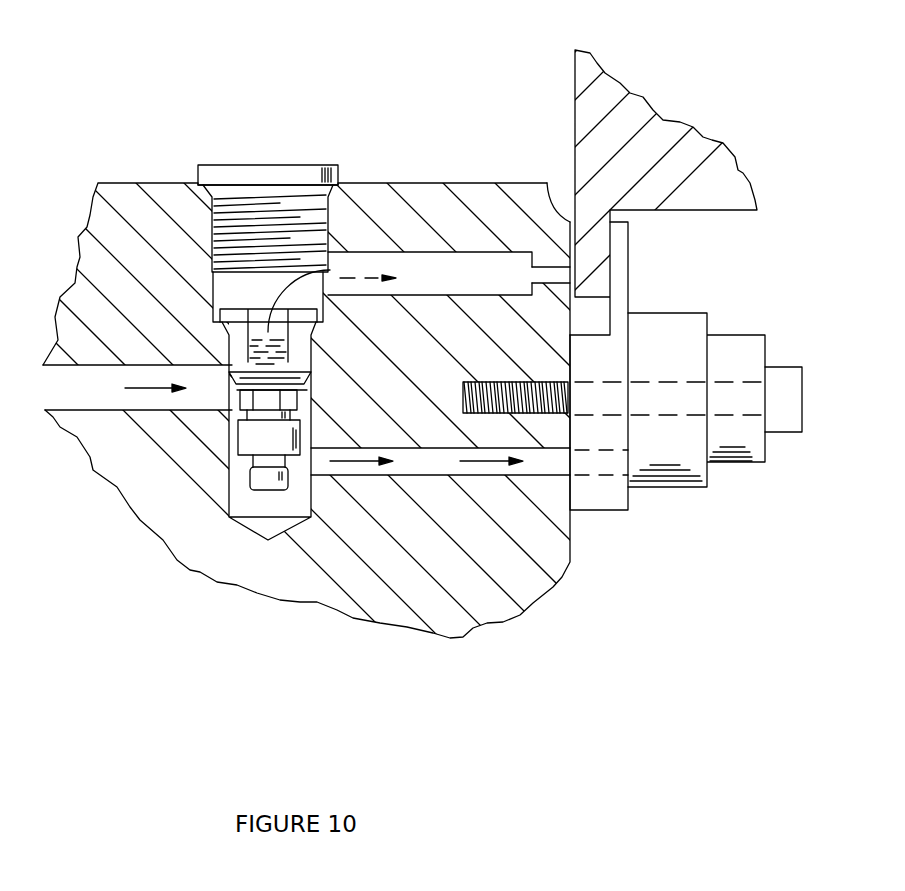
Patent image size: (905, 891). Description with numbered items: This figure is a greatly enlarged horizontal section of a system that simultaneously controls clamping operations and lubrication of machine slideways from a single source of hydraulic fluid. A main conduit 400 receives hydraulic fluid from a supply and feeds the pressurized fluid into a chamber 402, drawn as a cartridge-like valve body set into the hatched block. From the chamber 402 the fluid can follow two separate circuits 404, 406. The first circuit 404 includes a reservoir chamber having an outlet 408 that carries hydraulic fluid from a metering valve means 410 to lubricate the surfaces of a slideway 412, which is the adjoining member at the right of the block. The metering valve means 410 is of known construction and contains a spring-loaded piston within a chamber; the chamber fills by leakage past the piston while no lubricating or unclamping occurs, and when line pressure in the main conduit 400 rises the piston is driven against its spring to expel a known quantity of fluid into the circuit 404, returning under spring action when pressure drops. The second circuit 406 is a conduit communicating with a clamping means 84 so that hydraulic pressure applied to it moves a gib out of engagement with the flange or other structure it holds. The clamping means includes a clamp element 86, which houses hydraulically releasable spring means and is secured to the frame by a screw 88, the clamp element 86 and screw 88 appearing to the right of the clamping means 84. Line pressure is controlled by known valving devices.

The main conduit 400 is at (110, 393).
The chamber 402 is at (262, 505).
The circuit 404 is at (417, 252).
The circuit 406 is at (425, 462).
The outlet 408 is at (553, 273).
The metering valve means 410 is at (290, 399).
The slideway 412 is at (547, 195).
The clamping means 84 is at (603, 497).
The clamp element 86 is at (707, 487).
The screw 88 is at (788, 432).